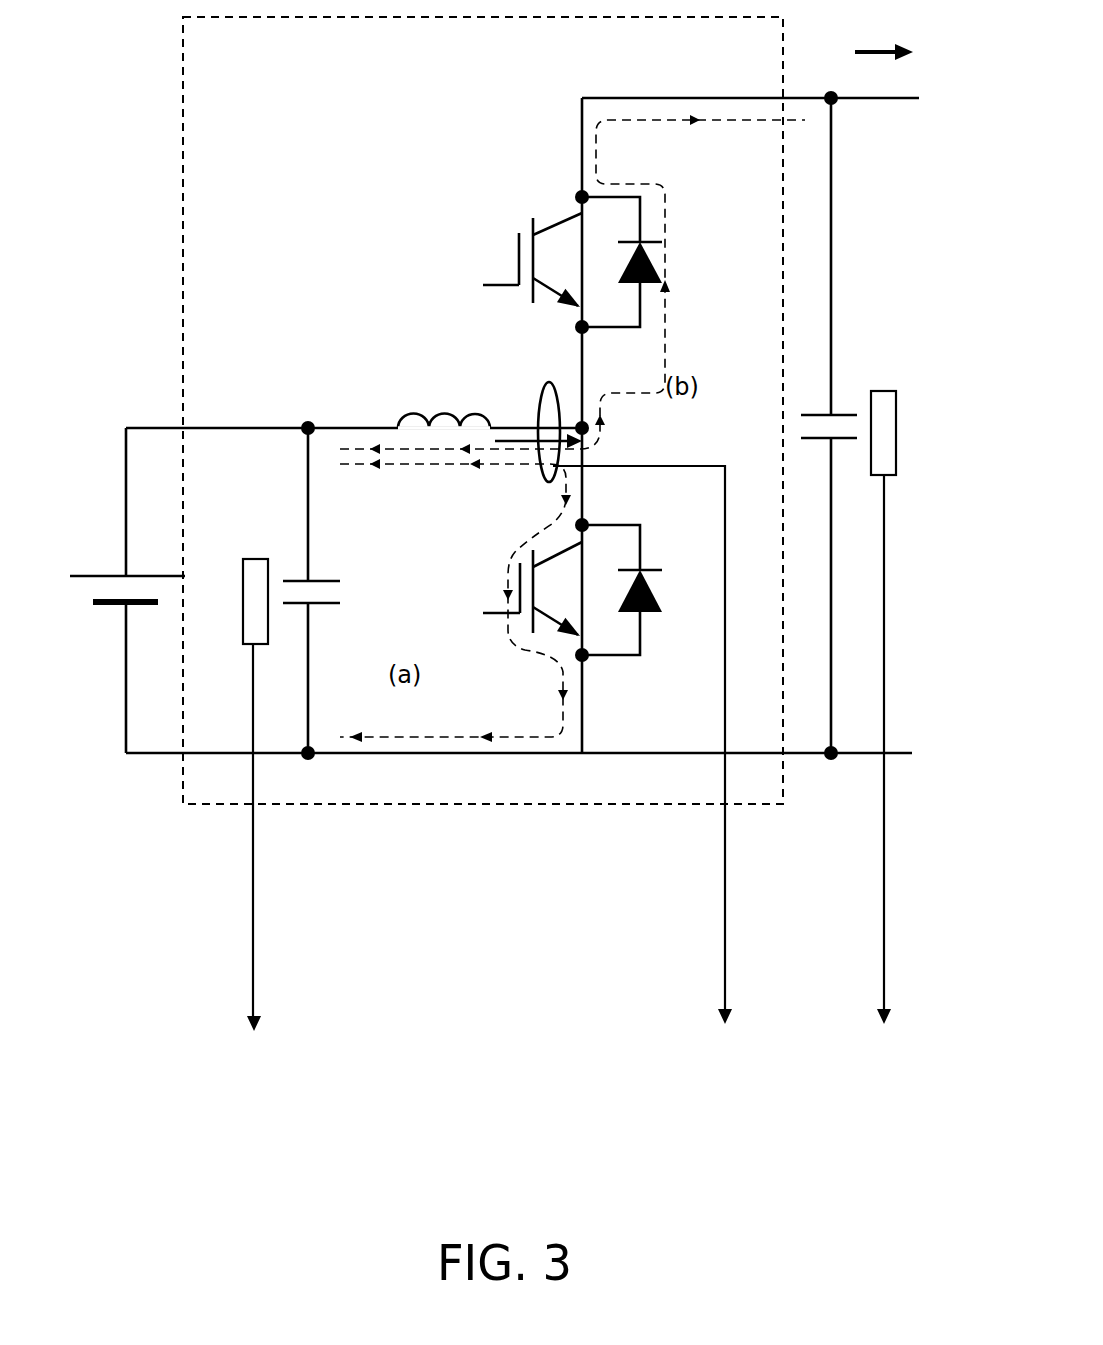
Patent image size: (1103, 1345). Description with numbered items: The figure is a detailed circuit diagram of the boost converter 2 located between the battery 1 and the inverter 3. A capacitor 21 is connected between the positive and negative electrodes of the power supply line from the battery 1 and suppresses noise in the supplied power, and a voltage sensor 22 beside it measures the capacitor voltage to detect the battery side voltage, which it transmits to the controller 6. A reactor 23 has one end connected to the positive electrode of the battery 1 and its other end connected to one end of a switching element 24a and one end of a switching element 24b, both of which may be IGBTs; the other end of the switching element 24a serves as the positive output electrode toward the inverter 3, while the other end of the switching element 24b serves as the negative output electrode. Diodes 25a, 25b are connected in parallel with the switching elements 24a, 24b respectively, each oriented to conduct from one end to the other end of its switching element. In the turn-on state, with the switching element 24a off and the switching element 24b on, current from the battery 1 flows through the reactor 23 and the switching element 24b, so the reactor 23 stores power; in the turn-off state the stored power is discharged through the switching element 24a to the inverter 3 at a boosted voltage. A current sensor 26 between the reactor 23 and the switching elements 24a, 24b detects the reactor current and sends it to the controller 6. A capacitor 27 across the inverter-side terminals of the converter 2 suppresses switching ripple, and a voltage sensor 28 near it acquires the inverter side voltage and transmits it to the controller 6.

The battery 1 is at (90, 575).
The converter 2 is at (178, 63).
The inverter 3 is at (906, 36).
The controller 6 is at (568, 771).
The capacitor 21 is at (292, 578).
The voltage sensor 22 is at (243, 645).
The reactor 23 is at (418, 400).
The switching element 24a is at (530, 222).
The switching element 24b is at (533, 650).
The diode 25a is at (660, 270).
The diode 25b is at (652, 613).
The current sensor 26 is at (540, 385).
The capacitor 27 is at (845, 410).
The voltage sensor 28 is at (897, 420).